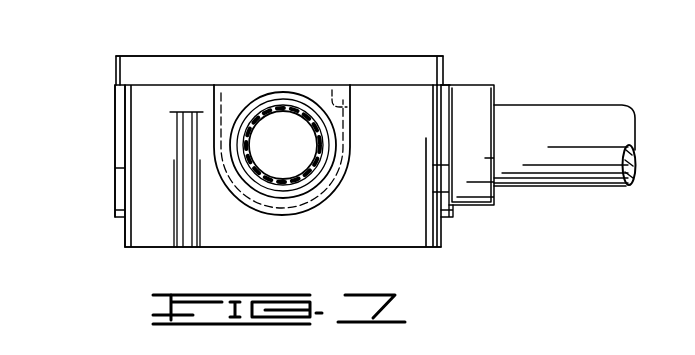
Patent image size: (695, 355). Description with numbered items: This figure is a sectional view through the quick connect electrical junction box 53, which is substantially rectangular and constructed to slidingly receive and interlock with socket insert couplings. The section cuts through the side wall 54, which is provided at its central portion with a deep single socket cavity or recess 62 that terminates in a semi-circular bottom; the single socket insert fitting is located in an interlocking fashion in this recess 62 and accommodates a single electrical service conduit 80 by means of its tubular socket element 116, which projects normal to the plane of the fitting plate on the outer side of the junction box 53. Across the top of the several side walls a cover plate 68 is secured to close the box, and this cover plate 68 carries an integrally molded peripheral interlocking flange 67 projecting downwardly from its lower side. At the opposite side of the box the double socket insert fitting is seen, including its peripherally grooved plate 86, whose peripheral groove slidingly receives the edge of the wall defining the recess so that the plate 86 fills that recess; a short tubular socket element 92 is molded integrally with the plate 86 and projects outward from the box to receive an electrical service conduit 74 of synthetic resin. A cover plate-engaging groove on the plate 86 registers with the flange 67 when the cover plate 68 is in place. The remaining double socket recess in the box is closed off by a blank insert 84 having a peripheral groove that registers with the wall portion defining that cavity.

The quick connect electrical junction box 53 is at (441, 247).
The side wall 54 is at (404, 202).
The single socket cavity or recess 62 is at (328, 97).
The peripheral interlocking flange 67 is at (167, 82).
The cover plate 68 is at (390, 56).
The electrical service conduit 74 is at (557, 115).
The electrical service conduit 80 is at (262, 168).
The blank insert 84 is at (113, 150).
The peripherally grooved plate 86 is at (443, 93).
The tubular socket element 92 is at (486, 146).
The tubular socket element 116 is at (302, 97).